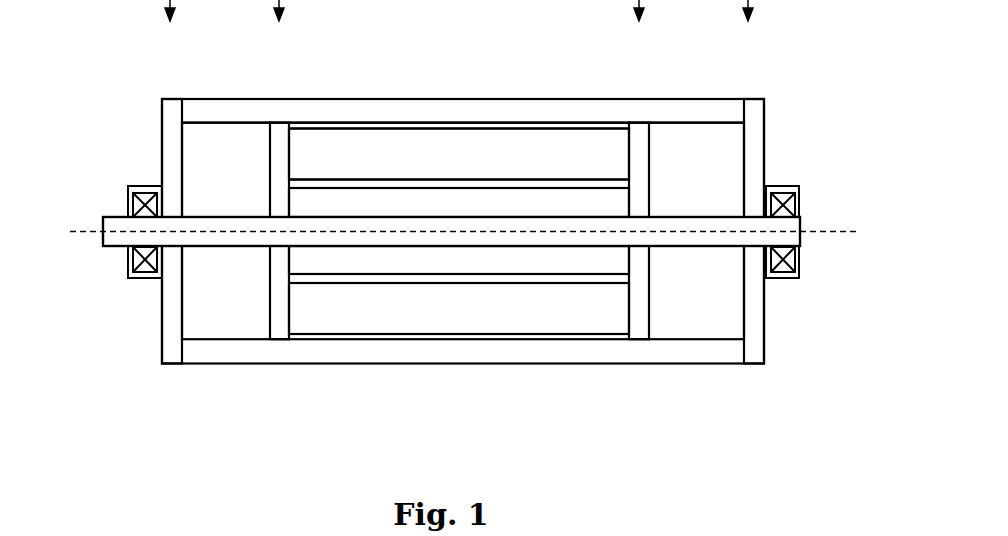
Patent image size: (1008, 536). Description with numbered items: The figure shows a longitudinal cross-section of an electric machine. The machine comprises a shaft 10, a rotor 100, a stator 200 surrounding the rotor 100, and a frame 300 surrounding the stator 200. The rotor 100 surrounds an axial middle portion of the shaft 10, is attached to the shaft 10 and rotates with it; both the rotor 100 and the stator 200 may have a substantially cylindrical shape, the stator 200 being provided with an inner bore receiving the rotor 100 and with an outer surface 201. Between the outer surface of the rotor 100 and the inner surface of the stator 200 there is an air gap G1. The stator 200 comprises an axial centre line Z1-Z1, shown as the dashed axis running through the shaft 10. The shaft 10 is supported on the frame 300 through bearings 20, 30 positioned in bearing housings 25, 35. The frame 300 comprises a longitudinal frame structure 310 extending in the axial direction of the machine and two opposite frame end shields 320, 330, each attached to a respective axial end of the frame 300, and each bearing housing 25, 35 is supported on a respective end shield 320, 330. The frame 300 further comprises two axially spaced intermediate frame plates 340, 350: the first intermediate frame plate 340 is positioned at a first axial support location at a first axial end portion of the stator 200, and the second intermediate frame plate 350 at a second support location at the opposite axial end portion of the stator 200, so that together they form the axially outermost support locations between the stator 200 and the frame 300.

The shaft 10 is at (800, 238).
The bearing 20 is at (142, 195).
The bearing housing 25 is at (142, 279).
The bearing 30 is at (782, 193).
The bearing housing 35 is at (781, 278).
The rotor 100 is at (530, 257).
The stator 200 is at (383, 308).
The outer surface 201 is at (504, 118).
The frame 300 is at (442, 106).
The longitudinal frame structure 310 is at (338, 106).
The frame end shield 320 is at (172, 113).
The frame end shield 330 is at (752, 107).
The first intermediate frame plate 340 is at (279, 327).
The second intermediate frame plate 350 is at (643, 323).
The air gap G1 is at (577, 183).
The axial centre line Z1 is at (80, 231).